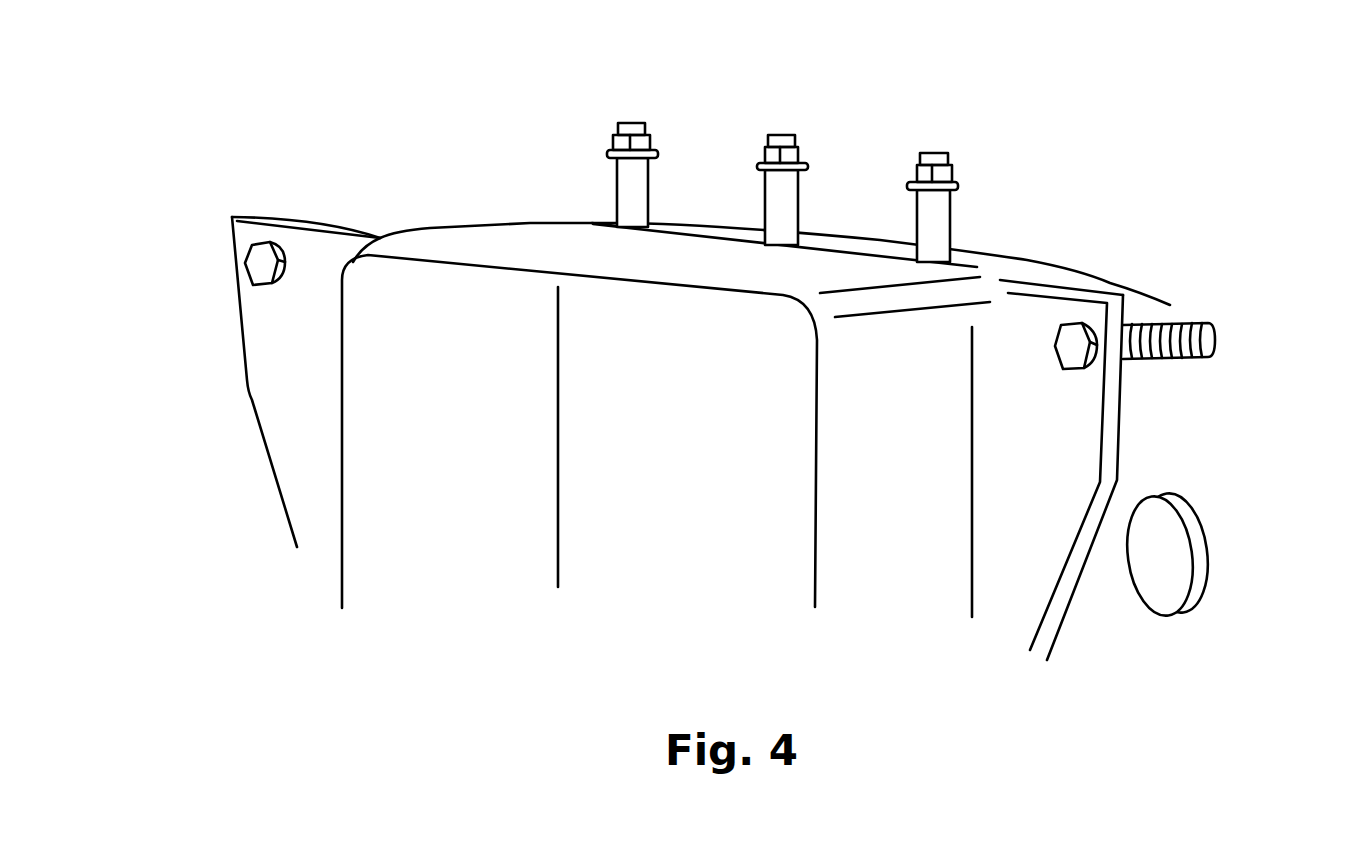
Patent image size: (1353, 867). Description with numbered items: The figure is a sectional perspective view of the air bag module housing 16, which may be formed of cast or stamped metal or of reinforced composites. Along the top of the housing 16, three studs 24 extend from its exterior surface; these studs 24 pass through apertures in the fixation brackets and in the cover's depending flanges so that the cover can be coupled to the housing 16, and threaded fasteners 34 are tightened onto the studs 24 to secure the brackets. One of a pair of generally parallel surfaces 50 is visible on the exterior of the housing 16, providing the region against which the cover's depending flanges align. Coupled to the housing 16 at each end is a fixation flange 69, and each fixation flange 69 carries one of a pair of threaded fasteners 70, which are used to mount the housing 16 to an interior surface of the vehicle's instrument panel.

The housing 16 is at (1122, 478).
The studs 24 is at (630, 123).
The threaded fasteners 34 is at (650, 142).
The generally parallel surface 50 is at (1013, 267).
The fixation flanges 69 is at (275, 358).
The threaded fasteners 70 is at (257, 262).